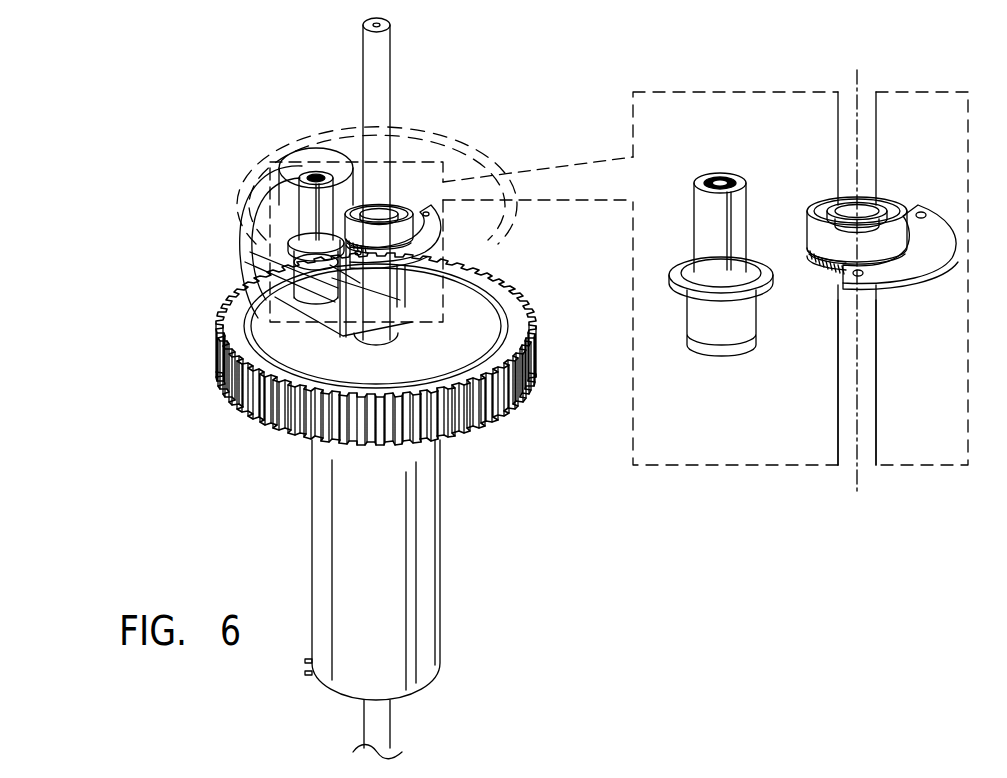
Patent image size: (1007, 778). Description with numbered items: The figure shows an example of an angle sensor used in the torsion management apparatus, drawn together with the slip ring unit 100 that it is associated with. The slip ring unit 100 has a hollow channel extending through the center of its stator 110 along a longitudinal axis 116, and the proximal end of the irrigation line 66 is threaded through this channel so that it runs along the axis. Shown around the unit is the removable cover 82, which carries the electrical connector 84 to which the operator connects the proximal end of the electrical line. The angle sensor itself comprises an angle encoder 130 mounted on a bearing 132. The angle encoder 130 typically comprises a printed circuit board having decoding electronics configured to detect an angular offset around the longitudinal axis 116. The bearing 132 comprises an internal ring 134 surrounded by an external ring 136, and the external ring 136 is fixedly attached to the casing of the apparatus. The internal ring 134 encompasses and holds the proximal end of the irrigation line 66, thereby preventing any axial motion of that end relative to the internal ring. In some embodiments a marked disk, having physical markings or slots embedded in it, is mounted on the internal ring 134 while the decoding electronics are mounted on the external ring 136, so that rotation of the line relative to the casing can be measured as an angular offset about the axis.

The slip ring unit 100 is at (256, 102).
The irrigation line 66 is at (378, 79).
The removable cover 82 is at (448, 130).
The connector 84 is at (315, 172).
The stator 110 is at (325, 500).
The longitudinal axis 116 is at (857, 417).
The angle encoder 130 is at (907, 283).
The bearing 132 is at (835, 247).
The internal ring 134 is at (828, 258).
The external ring 136 is at (832, 205).